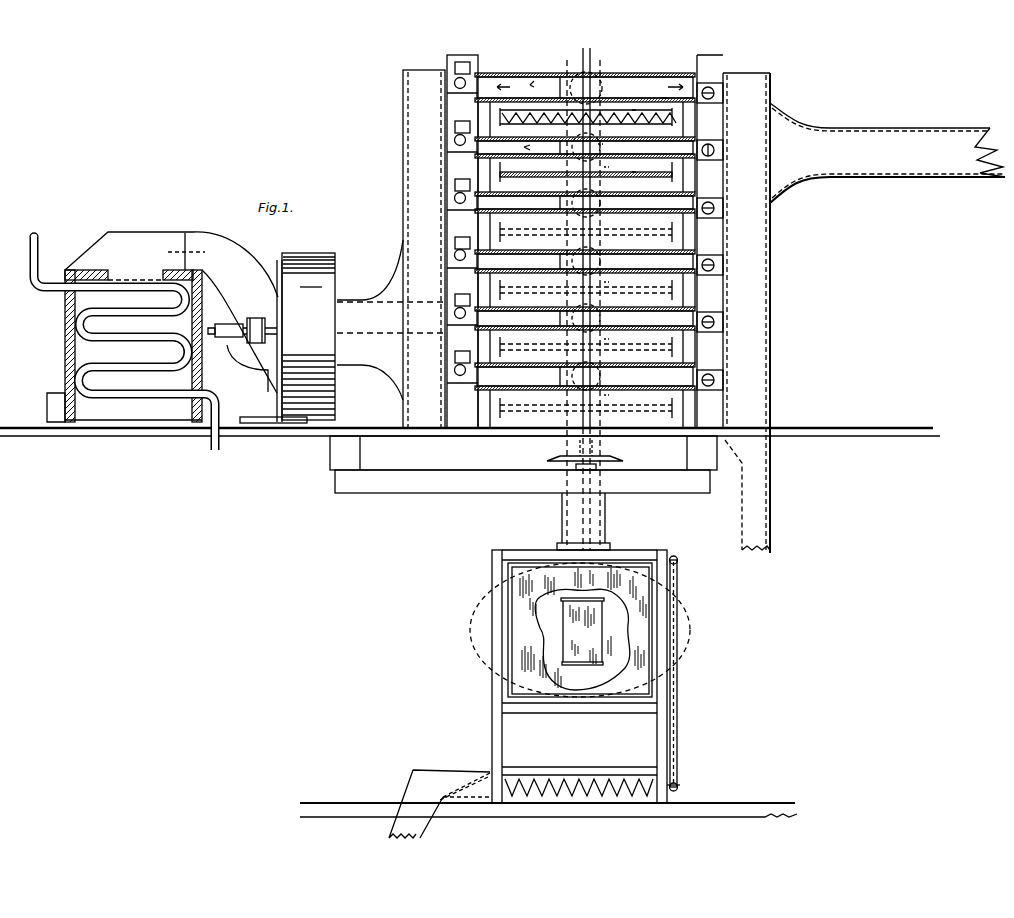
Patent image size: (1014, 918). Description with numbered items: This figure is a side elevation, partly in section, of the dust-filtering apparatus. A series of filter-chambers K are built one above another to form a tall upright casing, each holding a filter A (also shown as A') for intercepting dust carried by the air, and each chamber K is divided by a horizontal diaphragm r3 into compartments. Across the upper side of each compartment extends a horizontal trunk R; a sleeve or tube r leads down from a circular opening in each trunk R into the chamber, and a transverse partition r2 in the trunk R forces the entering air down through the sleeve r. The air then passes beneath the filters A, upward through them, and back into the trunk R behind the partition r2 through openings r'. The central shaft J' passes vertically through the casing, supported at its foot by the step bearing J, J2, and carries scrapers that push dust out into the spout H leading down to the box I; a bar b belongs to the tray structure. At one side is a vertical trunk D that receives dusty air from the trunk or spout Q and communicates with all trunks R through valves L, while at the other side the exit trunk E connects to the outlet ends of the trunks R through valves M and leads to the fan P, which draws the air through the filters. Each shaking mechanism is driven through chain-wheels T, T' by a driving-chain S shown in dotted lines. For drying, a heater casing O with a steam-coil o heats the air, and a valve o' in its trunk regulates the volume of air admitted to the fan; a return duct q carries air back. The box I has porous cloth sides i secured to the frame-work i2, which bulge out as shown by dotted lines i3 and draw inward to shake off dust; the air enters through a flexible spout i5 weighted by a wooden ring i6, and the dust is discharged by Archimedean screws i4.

The heater casing O is at (62, 347).
The steam-coil o is at (132, 341).
The valve o' is at (186, 251).
The fan P is at (326, 331).
The exit trunk E is at (424, 249).
The vertical trunk D is at (746, 313).
The valves M is at (454, 377).
The valves L is at (733, 380).
The trunk R is at (585, 231).
The sleeve or tube r is at (607, 267).
The openings r' is at (525, 118).
The transverse partition r2 is at (541, 231).
The horizontal diaphragm r3 is at (662, 98).
The chain-wheel T is at (590, 299).
The shaft bearing T' is at (575, 144).
The driving-chain S is at (593, 376).
The filter-chamber K is at (488, 406).
The filter A is at (603, 204).
The drying trays A' is at (605, 290).
The tray bar b is at (639, 136).
The step bearing J is at (523, 464).
The central shaft J' is at (605, 448).
The bearing part J2 is at (575, 449).
The spout H is at (583, 521).
The return duct q is at (747, 495).
The trunk or spout Q is at (887, 153).
The box or receptacle I is at (579, 676).
The sides i is at (634, 619).
The frame-work i2 is at (492, 565).
The dotted lines i3 is at (693, 627).
The Archimedean screws i4 is at (530, 790).
The spout i5 is at (582, 639).
The wooden ring i6 is at (603, 664).